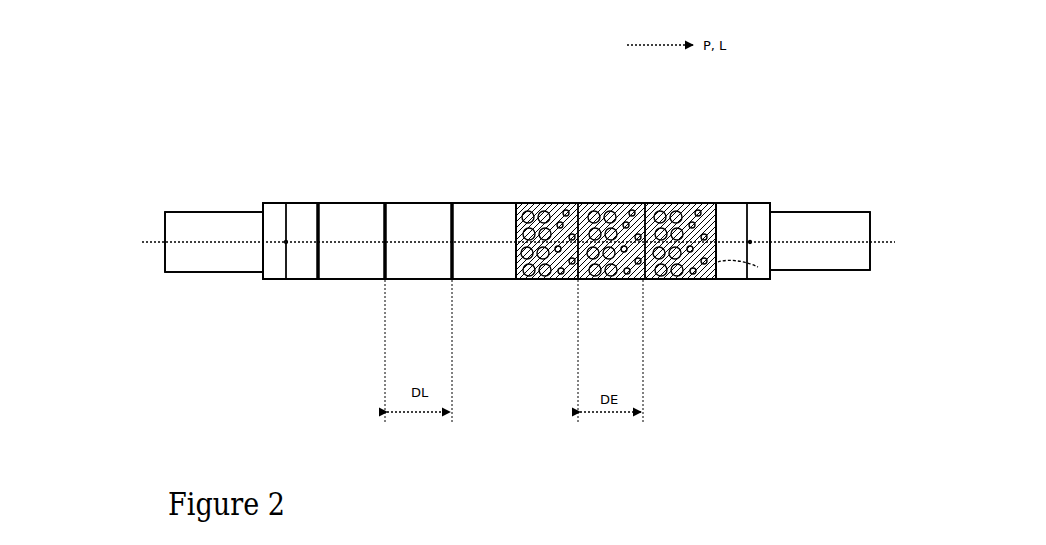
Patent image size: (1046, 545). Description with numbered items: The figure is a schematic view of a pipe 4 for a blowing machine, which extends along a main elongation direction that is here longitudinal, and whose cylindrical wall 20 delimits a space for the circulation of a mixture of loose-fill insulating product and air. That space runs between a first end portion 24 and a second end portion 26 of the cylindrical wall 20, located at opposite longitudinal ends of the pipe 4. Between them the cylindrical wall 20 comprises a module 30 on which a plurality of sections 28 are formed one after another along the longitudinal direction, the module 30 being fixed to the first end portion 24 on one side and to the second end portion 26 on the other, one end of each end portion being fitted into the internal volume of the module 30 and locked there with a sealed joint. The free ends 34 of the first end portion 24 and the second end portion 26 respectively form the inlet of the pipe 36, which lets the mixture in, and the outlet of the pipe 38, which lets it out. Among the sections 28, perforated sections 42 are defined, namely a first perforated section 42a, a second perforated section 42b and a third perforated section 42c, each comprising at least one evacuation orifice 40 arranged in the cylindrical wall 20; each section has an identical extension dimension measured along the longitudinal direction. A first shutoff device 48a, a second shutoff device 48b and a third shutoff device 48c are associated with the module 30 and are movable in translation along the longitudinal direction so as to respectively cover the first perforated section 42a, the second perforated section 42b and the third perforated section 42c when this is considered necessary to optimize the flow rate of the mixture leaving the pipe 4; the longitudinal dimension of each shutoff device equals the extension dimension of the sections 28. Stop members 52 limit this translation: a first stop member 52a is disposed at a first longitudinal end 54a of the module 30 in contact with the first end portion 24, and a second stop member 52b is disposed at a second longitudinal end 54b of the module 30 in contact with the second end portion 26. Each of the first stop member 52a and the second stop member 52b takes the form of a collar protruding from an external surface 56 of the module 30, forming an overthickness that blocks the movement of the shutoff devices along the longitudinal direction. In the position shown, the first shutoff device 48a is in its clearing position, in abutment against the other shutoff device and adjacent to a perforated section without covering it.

The pipe 4 is at (290, 112).
The cylindrical wall 20 is at (788, 210).
The first end portion 24 is at (225, 247).
The second end portion 26 is at (840, 212).
The sections 28 is at (647, 200).
The module 30 is at (716, 203).
The free ends 34 is at (509, 241).
The inlet of the pipe 36 is at (163, 224).
The outlet of the pipe 38 is at (907, 283).
The evacuation orifice 40 is at (543, 203).
The perforated sections 42 is at (617, 274).
The first perforated section 42a is at (692, 278).
The second perforated section 42b is at (627, 278).
The third perforated section 42c is at (532, 278).
The first shutoff device 48a is at (488, 203).
The second shutoff device 48b is at (418, 203).
The third shutoff device 48c is at (365, 272).
The stop members 52 is at (556, 280).
The first stop member 52a is at (295, 257).
The second stop member 52b is at (807, 312).
The first longitudinal end 54a is at (308, 185).
The second longitudinal end 54b is at (746, 186).
The external surface 56 is at (735, 265).